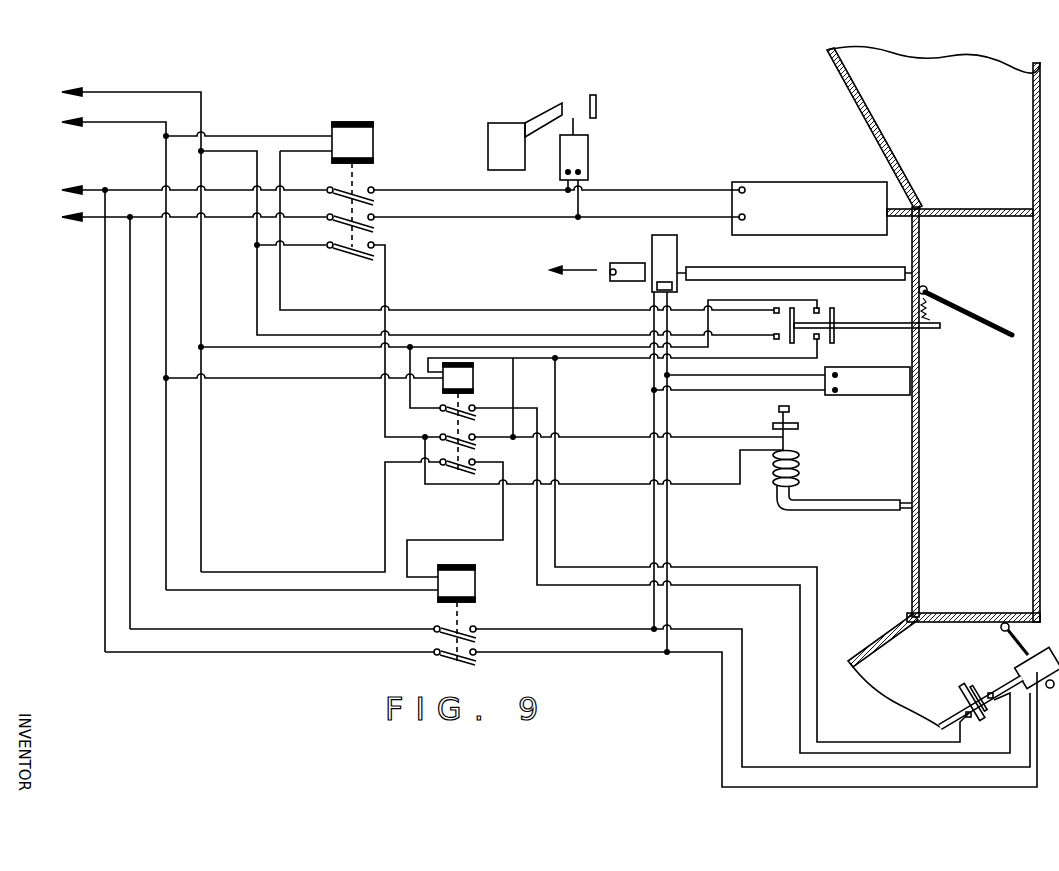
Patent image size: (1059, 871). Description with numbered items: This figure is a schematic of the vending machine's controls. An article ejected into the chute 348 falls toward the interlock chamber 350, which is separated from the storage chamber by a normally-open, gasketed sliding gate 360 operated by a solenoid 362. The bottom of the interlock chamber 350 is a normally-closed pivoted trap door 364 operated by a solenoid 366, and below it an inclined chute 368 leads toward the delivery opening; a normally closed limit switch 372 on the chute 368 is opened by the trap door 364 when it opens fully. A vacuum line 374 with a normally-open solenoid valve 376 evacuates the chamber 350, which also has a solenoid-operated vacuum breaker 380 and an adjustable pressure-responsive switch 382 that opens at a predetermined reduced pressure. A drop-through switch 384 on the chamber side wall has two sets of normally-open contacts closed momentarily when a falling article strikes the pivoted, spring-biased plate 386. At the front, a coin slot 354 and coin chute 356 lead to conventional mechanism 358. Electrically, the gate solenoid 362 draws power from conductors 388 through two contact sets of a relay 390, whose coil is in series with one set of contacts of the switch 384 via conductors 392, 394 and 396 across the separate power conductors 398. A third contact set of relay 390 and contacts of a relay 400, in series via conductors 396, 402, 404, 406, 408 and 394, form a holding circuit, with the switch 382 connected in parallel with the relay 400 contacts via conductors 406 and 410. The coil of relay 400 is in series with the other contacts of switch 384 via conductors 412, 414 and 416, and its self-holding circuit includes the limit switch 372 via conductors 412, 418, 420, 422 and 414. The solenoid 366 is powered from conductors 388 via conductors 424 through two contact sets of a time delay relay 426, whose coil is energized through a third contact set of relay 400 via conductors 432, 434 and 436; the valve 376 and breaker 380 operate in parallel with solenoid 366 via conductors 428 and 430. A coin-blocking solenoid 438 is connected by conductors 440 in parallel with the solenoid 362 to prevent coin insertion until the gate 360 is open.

The chute 348 is at (893, 98).
The interlock chamber 350 is at (930, 552).
The coin slot 354 is at (598, 107).
The coin chute 356 is at (547, 104).
The conventional mechanism 358 is at (488, 147).
The sliding gate 360 is at (935, 210).
The solenoid 362 is at (791, 185).
The trap door 364 is at (955, 611).
The solenoid 366 is at (1022, 668).
The inclined chute 368 is at (890, 658).
The limit switch 372 is at (973, 719).
The vacuum line 374 is at (770, 267).
The solenoid valve 376 is at (680, 253).
The solenoid-operated vacuum breaker 380 is at (880, 395).
The pressure-responsive switch 382 is at (795, 452).
The drop-through switch 384 is at (840, 302).
The spring-biased plate 386 is at (970, 308).
The conductors 388 is at (62, 191).
The relay 390 is at (373, 145).
The conductor 392 is at (262, 136).
The conductor 394 is at (282, 300).
The conductor 396 is at (255, 300).
The conductors 398 is at (64, 93).
The relay 400 is at (474, 382).
The conductor 402 is at (289, 246).
The conductor 404 is at (390, 295).
The conductor 406 is at (629, 424).
The conductor 408 is at (514, 387).
The conductor 410 is at (582, 484).
The conductor 412 is at (300, 347).
The conductor 414 is at (595, 361).
The conductor 416 is at (338, 381).
The conductor 418 is at (436, 410).
The conductor 420 is at (577, 588).
The conductor 422 is at (584, 568).
The conductors 424 is at (338, 650).
The time delay relay 426 is at (475, 581).
The conductor 428 is at (727, 378).
The conductor 430 is at (655, 528).
The conductor 432 is at (282, 572).
The conductor 434 is at (502, 525).
The conductor 436 is at (280, 592).
The coin-blocking solenoid 438 is at (590, 157).
The conductors 440 is at (572, 202).